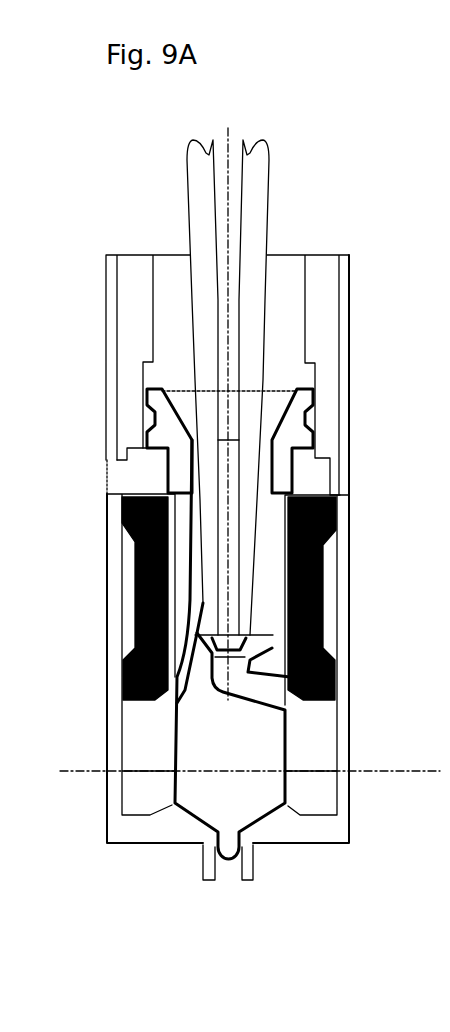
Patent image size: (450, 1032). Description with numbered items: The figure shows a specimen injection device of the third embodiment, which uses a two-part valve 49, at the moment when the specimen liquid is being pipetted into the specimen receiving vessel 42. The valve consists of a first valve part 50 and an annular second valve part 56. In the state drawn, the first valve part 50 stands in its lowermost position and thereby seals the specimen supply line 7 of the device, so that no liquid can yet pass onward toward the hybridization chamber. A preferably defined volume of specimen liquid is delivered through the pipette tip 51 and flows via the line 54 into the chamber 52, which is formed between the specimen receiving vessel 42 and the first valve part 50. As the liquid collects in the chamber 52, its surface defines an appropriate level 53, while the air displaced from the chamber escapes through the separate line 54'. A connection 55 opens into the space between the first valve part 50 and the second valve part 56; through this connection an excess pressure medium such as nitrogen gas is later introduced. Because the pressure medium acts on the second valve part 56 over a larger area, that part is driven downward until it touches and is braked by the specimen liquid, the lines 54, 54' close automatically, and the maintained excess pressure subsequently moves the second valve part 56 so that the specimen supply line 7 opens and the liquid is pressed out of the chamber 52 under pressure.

The two-part valve 49 is at (375, 517).
The specimen receiving vessel 42 is at (342, 823).
The connection 55 is at (128, 478).
The chamber 52 is at (313, 797).
The second valve part 56 is at (135, 575).
The first valve part 50 is at (290, 428).
The pipette tip 51 is at (256, 214).
The line 54' is at (120, 681).
The line 54 is at (339, 706).
The level 53 is at (439, 760).
The specimen supply line 7 is at (203, 853).